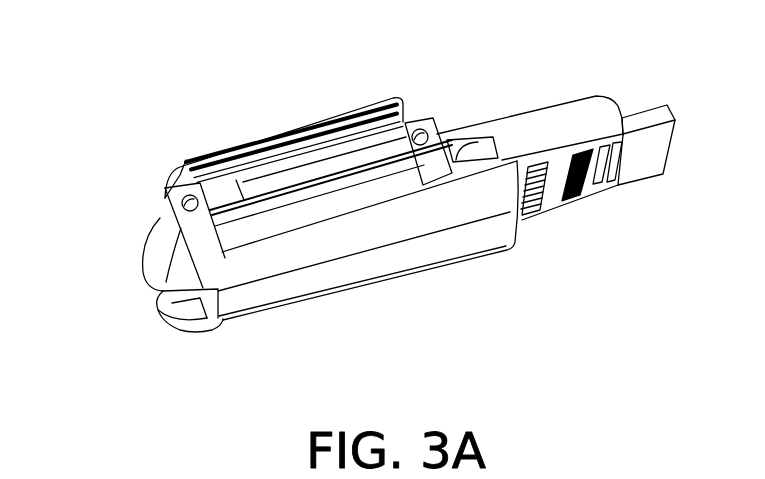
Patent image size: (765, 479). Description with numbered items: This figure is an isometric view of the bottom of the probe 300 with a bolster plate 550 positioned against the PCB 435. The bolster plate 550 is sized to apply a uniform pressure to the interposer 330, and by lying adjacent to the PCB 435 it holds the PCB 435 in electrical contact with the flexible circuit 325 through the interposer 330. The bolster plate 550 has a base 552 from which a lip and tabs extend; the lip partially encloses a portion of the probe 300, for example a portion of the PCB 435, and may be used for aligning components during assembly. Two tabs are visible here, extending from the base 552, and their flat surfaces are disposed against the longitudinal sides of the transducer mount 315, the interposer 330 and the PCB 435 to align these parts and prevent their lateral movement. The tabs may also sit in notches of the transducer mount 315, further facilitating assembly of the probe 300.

The probe 300 is at (133, 100).
The transducer mount 315 is at (357, 140).
The flexible circuit 325 is at (161, 222).
The interposer 330 is at (247, 207).
The PCB 435 is at (648, 116).
The bolster plate 550 is at (490, 260).
The base 552 is at (314, 290).